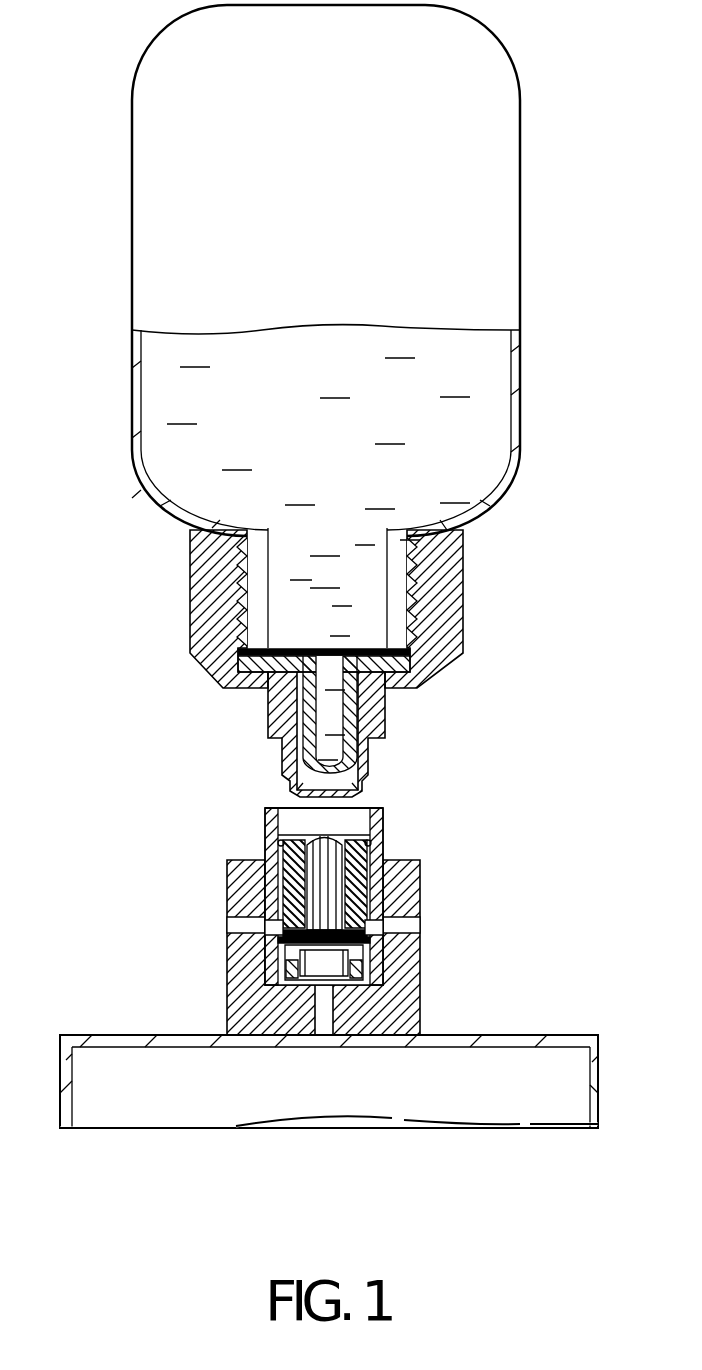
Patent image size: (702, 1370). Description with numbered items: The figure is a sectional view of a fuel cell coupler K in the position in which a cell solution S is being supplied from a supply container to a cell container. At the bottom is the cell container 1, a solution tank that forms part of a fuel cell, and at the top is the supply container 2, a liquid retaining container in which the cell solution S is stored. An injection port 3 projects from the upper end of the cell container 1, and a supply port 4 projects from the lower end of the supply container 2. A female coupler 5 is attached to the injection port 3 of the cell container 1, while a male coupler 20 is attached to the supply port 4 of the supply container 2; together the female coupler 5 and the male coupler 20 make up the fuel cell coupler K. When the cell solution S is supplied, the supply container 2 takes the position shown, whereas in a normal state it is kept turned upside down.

The cell container 1 is at (541, 1034).
The supply container 2 is at (521, 358).
The injection port 3 is at (227, 887).
The supply port 4 is at (245, 600).
The female coupler 5 is at (403, 832).
The male coupler 20 is at (485, 640).
The fuel cell coupler K is at (218, 722).
The cell solution S is at (150, 465).